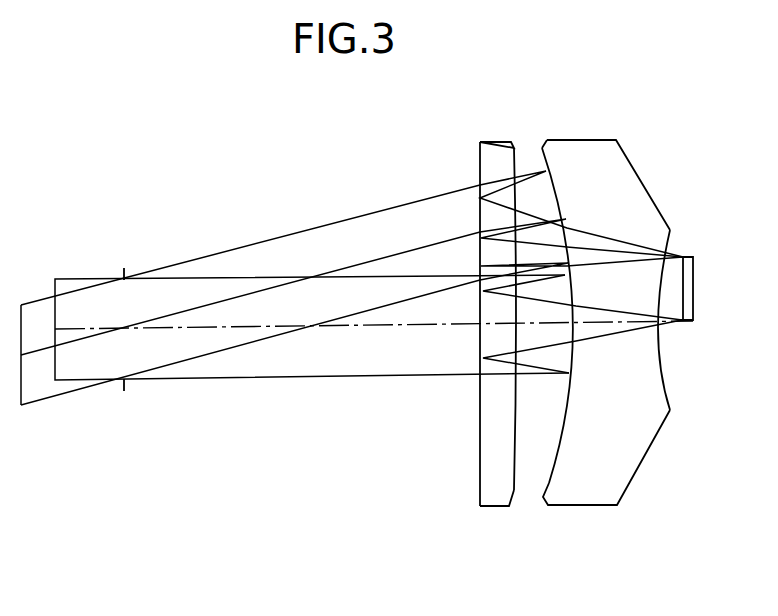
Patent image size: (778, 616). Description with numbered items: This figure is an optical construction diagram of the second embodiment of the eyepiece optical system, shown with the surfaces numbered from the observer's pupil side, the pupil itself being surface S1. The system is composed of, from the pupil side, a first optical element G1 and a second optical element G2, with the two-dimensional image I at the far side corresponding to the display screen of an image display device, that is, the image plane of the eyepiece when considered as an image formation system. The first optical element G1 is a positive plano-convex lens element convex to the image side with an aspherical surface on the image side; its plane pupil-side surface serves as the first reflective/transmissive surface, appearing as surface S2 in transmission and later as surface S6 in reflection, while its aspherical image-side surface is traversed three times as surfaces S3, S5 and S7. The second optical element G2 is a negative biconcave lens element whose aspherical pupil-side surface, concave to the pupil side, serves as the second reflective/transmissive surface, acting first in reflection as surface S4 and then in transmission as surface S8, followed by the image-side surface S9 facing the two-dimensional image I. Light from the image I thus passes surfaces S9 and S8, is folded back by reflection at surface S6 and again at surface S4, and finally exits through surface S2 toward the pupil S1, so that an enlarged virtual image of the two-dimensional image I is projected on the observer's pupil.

The pupil surface S1 is at (122, 268).
The first reflective/transmissive surface S2 is at (401, 315).
The first reflective/transmissive surface S6 is at (480, 154).
The aspherical surface S3 is at (554, 373).
The aspherical surface S5 is at (554, 373).
The aspherical surface S7 is at (512, 487).
The second reflective/transmissive surface S4 is at (630, 351).
The second reflective/transmissive surface S8 is at (553, 487).
The image-side surface of second optical element S9 is at (665, 377).
The first optical element G1 is at (477, 341).
The second optical element G2 is at (633, 319).
The two-dimensional image I is at (693, 267).